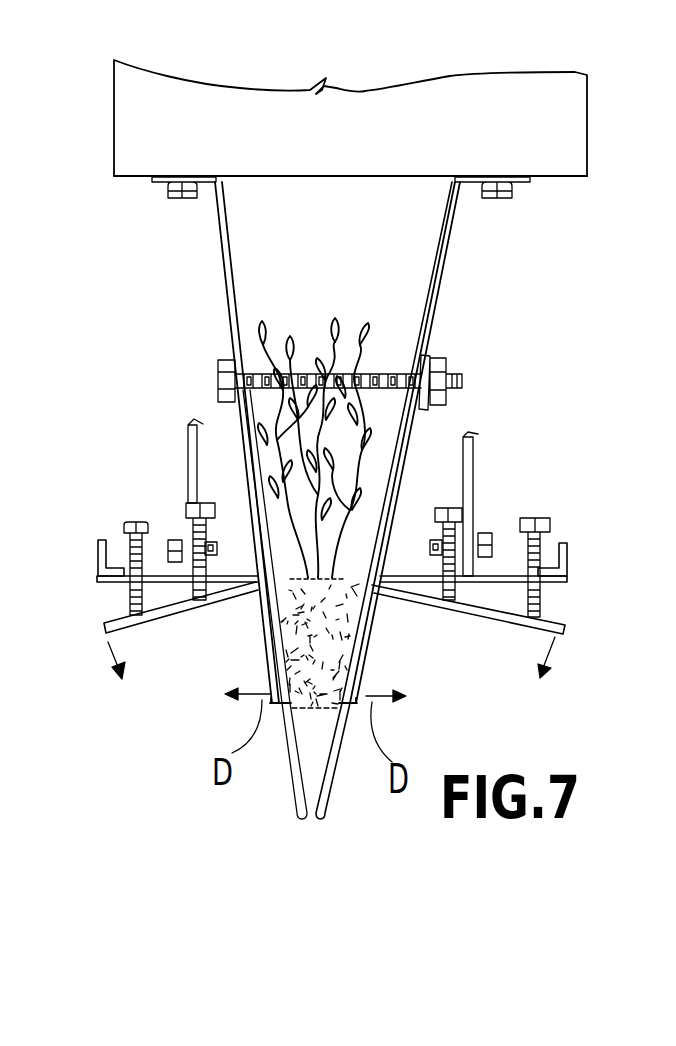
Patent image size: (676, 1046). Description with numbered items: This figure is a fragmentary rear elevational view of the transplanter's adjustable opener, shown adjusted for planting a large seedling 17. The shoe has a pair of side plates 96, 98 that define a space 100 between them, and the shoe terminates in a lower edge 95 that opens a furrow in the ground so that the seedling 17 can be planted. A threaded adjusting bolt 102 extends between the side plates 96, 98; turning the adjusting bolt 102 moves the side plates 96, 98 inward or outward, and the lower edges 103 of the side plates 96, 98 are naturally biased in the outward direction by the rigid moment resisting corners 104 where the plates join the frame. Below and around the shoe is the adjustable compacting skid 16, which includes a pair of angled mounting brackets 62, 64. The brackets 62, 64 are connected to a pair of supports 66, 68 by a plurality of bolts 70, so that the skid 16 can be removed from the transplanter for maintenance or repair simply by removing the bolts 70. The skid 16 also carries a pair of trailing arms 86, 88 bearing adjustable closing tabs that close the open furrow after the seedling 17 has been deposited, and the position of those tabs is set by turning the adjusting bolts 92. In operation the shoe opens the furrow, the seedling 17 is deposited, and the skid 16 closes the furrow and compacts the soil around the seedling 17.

The adjustable compacting skid 16 is at (567, 580).
The seedling 17 is at (320, 638).
The angled mounting bracket 62 is at (160, 550).
The angled mounting bracket 64 is at (560, 540).
The support 66 is at (185, 425).
The support 68 is at (478, 455).
The bolt 70 is at (166, 562).
The trailing arm 86 is at (188, 585).
The trailing arm 88 is at (498, 587).
The adjusting bolt 92 is at (128, 525).
The lower edge 95 is at (300, 818).
The side plate 96 is at (220, 268).
The side plate 98 is at (437, 263).
The space 100 is at (363, 258).
The threaded adjusting bolt 102 is at (420, 338).
The lower edges of side plates 103 is at (275, 672).
The rigid moment resisting corner 104 is at (218, 178).